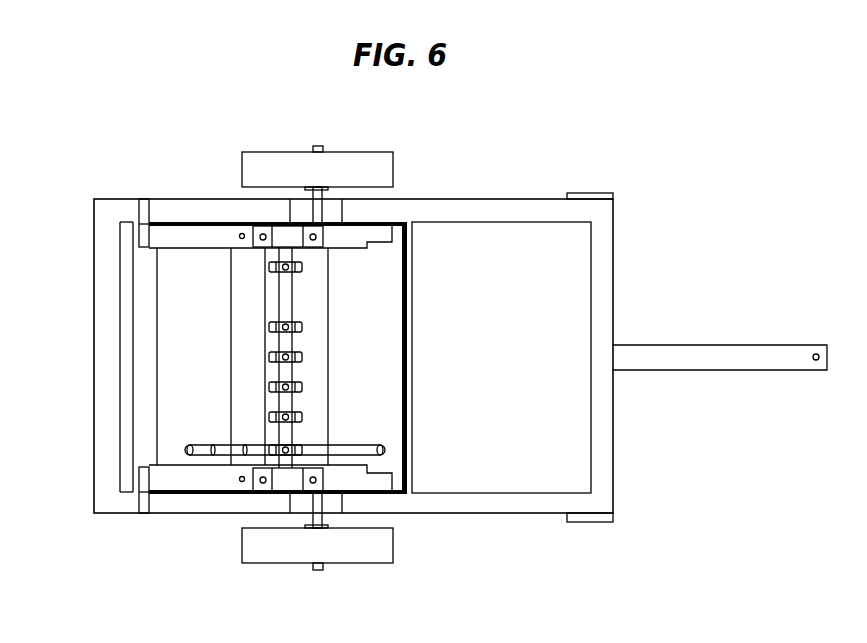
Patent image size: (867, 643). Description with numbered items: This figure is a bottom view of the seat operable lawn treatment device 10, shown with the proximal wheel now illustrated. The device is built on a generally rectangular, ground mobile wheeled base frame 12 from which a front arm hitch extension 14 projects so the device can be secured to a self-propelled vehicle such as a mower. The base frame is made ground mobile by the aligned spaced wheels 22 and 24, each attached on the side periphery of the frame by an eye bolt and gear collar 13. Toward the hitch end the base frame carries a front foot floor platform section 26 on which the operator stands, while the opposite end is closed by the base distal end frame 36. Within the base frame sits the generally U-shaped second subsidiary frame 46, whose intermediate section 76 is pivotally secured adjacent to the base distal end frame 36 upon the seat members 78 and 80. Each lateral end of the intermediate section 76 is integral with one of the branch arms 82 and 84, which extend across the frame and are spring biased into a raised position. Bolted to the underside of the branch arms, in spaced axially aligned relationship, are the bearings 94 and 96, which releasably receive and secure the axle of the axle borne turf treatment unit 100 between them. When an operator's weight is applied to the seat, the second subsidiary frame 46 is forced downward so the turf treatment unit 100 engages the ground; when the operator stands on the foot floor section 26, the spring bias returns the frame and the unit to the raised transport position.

The seat operable lawn treatment device 10 is at (598, 134).
The wheeled base frame 12 is at (100, 238).
The eye bolt and gear collar 13 is at (317, 213).
The front arm hitch extension 14 is at (763, 357).
The wheel 22 is at (290, 545).
The wheel 24 is at (366, 158).
The front foot floor platform section 26 is at (553, 291).
The base distal end frame 36 is at (105, 365).
The second subsidiary frame 46 is at (147, 403).
The intermediate section 76 is at (148, 310).
The seat member 78 is at (142, 503).
The seat member 80 is at (143, 212).
The branch arm 82 is at (190, 478).
The branch arm 84 is at (190, 237).
The bearing 94 is at (282, 487).
The bearing 96 is at (280, 233).
The axle borne turf treatment unit 100 is at (327, 322).